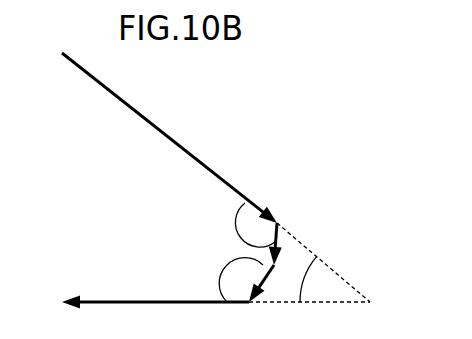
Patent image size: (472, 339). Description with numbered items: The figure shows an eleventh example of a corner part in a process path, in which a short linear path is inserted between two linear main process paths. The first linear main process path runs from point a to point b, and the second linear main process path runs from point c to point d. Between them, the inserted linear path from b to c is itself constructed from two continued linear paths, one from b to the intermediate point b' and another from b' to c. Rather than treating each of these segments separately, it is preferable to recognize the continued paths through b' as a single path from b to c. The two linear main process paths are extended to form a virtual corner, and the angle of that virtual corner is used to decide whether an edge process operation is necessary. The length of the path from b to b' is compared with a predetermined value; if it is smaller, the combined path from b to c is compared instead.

The start point of linear main process path ab a is at (160, 130).
The junction point between paths ab and bc b is at (315, 244).
The intermediate point dividing linear path bc b' is at (300, 243).
The junction point between paths bc and cd c is at (302, 320).
The end point of linear main process path cd d is at (155, 317).